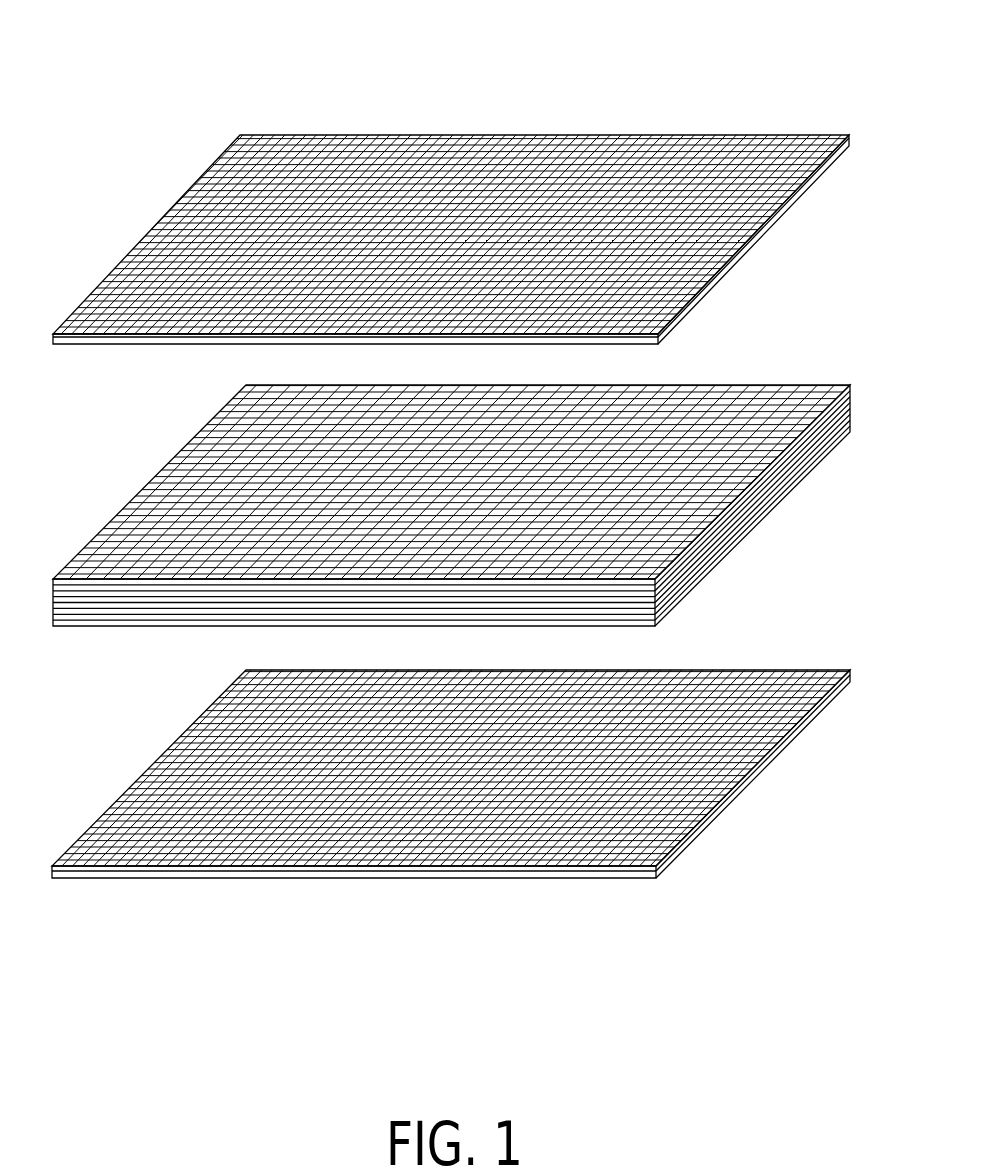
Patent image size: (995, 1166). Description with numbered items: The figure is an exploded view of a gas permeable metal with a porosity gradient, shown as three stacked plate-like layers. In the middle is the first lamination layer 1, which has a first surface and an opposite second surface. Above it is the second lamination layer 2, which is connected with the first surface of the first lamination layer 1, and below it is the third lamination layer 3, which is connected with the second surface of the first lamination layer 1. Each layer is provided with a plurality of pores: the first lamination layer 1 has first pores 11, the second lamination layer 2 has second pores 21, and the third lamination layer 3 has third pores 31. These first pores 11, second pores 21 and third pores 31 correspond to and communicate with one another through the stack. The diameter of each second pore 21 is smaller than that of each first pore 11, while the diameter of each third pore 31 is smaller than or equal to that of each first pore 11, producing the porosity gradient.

The first lamination layer 1 is at (457, 456).
The first pores 11 is at (770, 407).
The second lamination layer 2 is at (451, 183).
The second pores 21 is at (690, 127).
The third lamination layer 3 is at (451, 814).
The third pores 31 is at (557, 857).